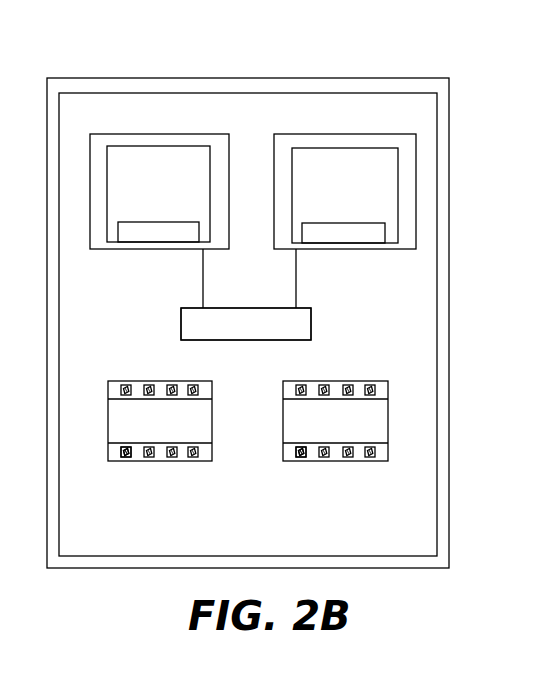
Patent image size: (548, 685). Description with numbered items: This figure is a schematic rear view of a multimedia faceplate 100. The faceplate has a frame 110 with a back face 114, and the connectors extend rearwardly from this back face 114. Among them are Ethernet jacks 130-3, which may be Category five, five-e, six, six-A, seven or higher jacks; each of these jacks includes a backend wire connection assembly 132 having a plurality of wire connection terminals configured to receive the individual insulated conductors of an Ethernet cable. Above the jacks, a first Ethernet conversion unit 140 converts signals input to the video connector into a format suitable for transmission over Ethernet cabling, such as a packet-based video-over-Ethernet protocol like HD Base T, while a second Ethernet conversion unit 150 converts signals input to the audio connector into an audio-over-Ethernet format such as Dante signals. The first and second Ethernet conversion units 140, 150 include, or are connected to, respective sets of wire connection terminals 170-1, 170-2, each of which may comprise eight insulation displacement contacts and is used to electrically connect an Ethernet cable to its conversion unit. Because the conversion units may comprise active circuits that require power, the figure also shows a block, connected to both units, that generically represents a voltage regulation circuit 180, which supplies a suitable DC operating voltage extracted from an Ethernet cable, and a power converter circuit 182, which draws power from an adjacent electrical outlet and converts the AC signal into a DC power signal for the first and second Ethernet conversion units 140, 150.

The multimedia faceplate 100 is at (248, 60).
The frame 110 is at (127, 83).
The back face 114 is at (300, 108).
The first Ethernet conversion unit 140 is at (146, 131).
The second Ethernet conversion unit 150 is at (364, 132).
The set of wire connection terminals 170-1 is at (131, 236).
The set of wire connection terminals 170-2 is at (368, 237).
The voltage regulation circuit 180 is at (246, 324).
The power converter circuit 182 is at (246, 324).
The RJ-45 jacks 130-3 is at (152, 380).
The backend wire connection assembly 132 is at (113, 455).